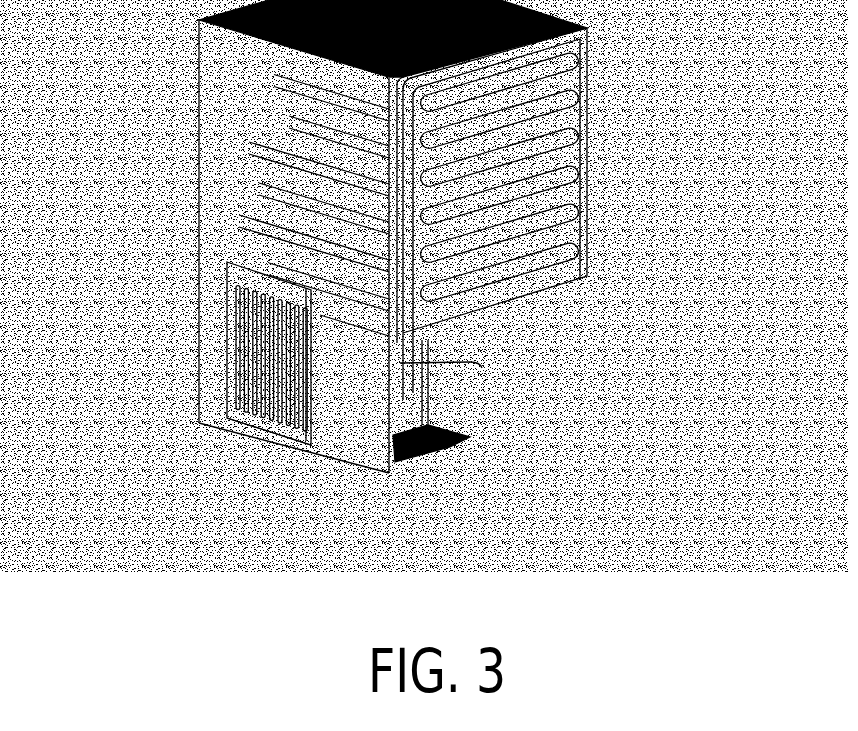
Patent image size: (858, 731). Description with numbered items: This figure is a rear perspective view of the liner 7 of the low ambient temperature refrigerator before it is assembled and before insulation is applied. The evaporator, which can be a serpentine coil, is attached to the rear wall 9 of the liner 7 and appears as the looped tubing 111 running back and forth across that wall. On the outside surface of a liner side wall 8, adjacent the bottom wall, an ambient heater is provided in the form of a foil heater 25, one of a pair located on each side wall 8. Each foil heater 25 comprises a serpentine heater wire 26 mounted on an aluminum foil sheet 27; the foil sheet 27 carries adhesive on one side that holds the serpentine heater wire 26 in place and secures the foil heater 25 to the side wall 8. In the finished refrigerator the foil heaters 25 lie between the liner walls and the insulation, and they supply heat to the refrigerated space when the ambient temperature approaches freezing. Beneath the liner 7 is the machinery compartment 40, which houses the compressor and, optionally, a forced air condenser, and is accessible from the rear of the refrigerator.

The liner 7 is at (197, 213).
The liner side wall 8 is at (245, 158).
The rear wall 9 is at (579, 76).
The condenser tube 111 is at (579, 135).
The foil heater 25 is at (287, 441).
The serpentine heater wire 26 is at (247, 397).
The aluminum foil sheet 27 is at (227, 358).
The machinery compartment 40 is at (449, 403).